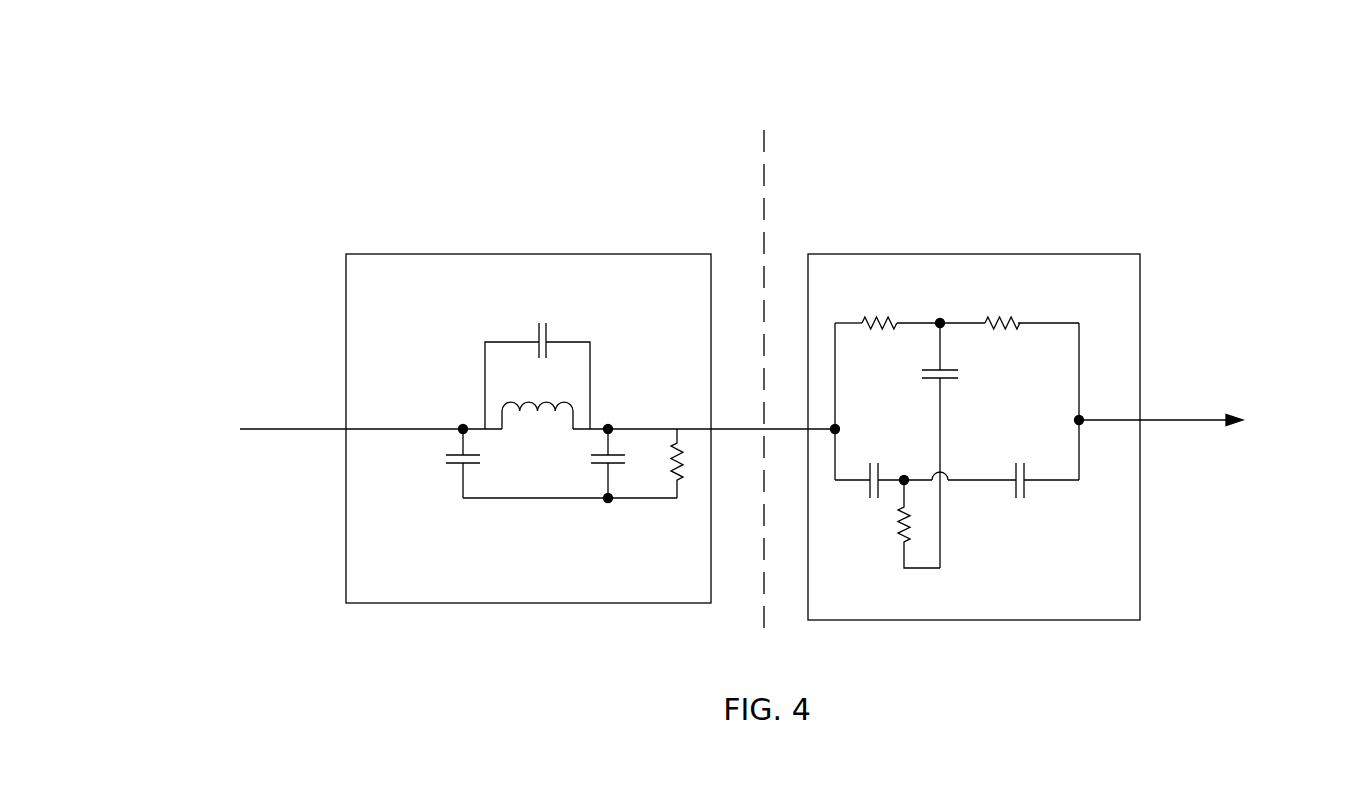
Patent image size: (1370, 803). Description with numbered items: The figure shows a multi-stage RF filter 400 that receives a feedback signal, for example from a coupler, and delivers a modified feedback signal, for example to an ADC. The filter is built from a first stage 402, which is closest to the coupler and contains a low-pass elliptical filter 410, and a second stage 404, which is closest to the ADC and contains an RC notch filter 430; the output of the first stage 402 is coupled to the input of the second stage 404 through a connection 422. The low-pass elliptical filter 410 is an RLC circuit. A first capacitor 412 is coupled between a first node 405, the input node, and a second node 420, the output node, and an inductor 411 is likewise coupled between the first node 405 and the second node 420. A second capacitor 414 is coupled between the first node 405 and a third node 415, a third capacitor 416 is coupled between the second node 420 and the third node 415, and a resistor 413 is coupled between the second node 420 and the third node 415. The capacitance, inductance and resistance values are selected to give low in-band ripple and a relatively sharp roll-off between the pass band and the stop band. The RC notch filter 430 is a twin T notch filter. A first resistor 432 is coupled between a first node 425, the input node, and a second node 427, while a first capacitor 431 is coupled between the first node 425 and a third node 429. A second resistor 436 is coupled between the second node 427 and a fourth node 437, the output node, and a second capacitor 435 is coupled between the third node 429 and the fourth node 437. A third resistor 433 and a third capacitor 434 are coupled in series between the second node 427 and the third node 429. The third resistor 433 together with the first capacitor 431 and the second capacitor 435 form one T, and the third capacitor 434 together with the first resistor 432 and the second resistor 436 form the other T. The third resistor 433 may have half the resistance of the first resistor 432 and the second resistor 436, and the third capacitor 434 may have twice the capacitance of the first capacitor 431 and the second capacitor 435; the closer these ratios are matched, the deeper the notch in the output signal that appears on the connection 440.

The multi-stage RF filter 400 is at (1140, 90).
The first stage 402 is at (632, 137).
The second stage 404 is at (903, 140).
The first node 405 is at (463, 429).
The low-pass elliptical filter 410 is at (613, 254).
The inductor 411 is at (544, 424).
The first capacitor 412 is at (542, 321).
The resistor 413 is at (670, 473).
The second capacitor 414 is at (452, 475).
The third node 415 is at (608, 500).
The third capacitor 416 is at (597, 473).
The second node 420 is at (608, 429).
The connection 422 is at (747, 440).
The first node 425 is at (835, 429).
The second node 427 is at (940, 327).
The third node 429 is at (904, 476).
The RC notch filter 430 is at (1040, 254).
The first capacitor 431 is at (875, 503).
The first resistor 432 is at (878, 313).
The third resistor 433 is at (890, 523).
The third capacitor 434 is at (929, 366).
The second capacitor 435 is at (1020, 507).
The second resistor 436 is at (1003, 313).
The fourth node 437 is at (1079, 420).
The connection 440 is at (1157, 420).